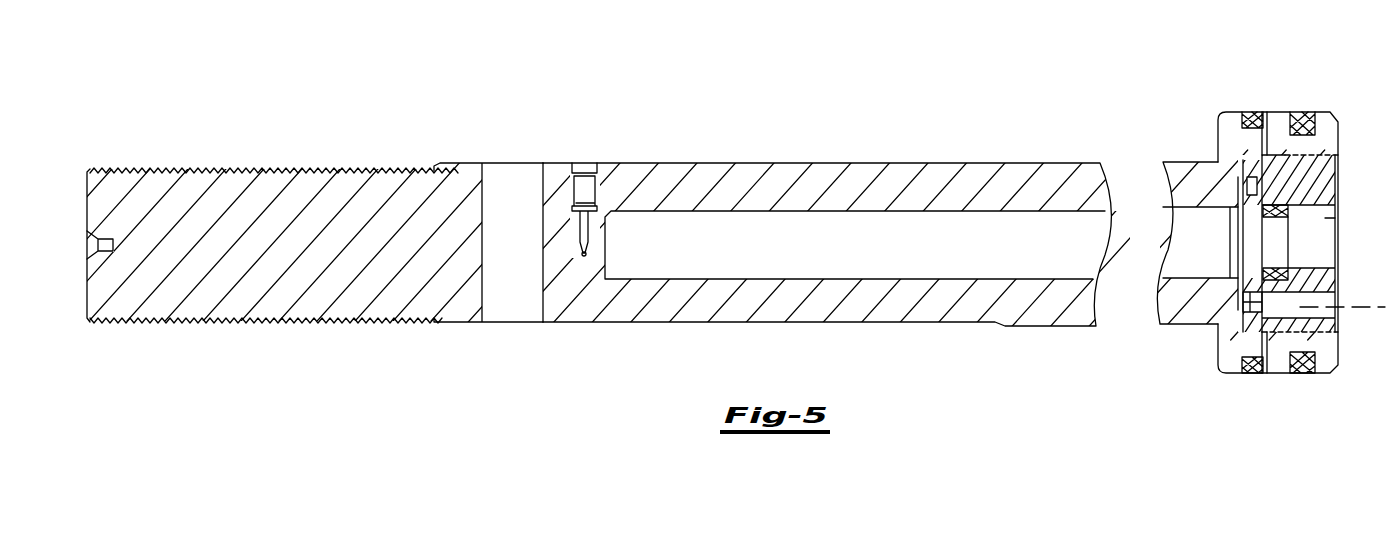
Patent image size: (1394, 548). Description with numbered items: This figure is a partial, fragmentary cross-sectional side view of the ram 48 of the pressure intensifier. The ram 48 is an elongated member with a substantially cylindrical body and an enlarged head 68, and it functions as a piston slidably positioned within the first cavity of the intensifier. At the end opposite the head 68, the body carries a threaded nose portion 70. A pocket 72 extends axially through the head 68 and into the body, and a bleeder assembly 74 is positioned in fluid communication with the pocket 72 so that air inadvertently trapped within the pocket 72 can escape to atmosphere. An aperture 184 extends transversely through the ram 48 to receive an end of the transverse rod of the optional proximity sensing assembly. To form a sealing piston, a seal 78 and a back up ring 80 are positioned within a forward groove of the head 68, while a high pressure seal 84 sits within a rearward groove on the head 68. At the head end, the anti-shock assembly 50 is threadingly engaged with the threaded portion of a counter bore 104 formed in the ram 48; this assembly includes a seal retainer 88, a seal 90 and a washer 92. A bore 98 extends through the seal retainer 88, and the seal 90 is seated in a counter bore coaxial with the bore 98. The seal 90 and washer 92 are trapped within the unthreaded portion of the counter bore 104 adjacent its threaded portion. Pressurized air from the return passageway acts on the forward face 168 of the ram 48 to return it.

The ram 48 is at (697, 201).
The threaded nose portion 70 is at (205, 168).
The bleeder assembly 74 is at (556, 195).
The pocket 72 is at (700, 213).
The aperture 184 is at (543, 300).
The head 68 is at (1230, 105).
The seal retainer 88 is at (1295, 150).
The anti-shock assembly 50 is at (1313, 144).
The washer 92 is at (1252, 170).
The seal 90 is at (1280, 277).
The bore 98 is at (1326, 218).
The counter bore 104 is at (1283, 332).
The forward face 168 is at (1218, 350).
The seal 78 is at (1252, 376).
The back up ring 80 is at (1266, 376).
The high pressure seal 84 is at (1300, 376).